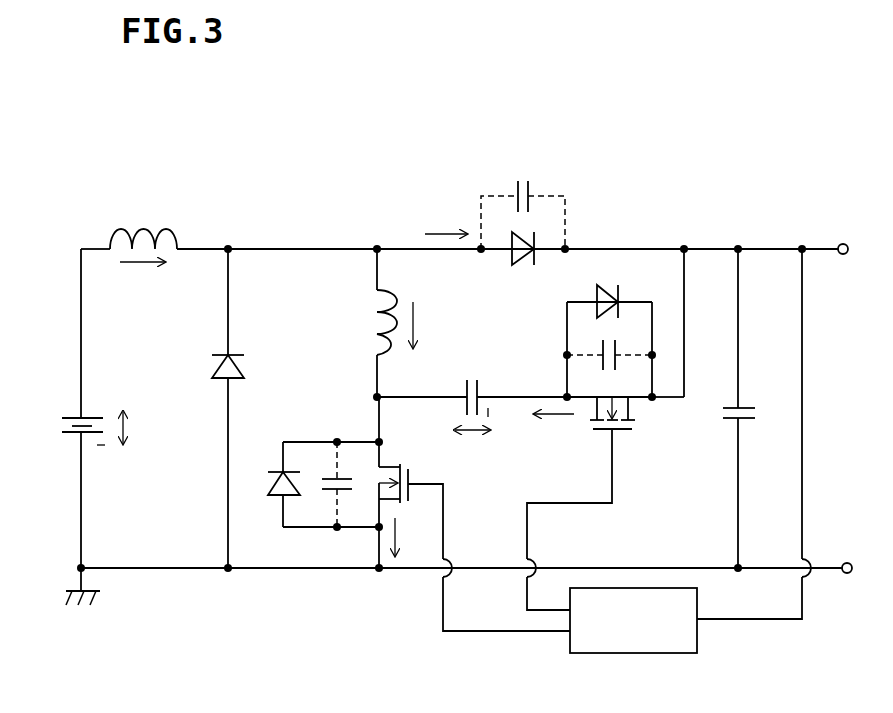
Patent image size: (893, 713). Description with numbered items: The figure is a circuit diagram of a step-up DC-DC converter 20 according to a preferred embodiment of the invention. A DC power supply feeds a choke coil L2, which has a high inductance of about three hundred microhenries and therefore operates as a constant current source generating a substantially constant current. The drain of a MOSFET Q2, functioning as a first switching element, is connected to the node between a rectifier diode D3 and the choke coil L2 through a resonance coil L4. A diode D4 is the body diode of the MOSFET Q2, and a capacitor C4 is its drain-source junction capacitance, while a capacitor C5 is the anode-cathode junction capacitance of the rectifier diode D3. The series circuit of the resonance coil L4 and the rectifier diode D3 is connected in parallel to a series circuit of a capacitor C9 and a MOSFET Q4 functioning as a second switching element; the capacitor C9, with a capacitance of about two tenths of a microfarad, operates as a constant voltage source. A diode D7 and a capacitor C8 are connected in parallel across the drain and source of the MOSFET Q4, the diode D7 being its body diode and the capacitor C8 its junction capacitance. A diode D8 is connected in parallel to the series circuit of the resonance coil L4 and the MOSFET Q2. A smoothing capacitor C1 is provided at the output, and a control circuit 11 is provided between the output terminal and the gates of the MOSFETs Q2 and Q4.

The DC-DC converter 20 is at (763, 174).
The control circuit 11 is at (697, 636).
The choke coil L2 is at (143, 226).
The diode D8 is at (207, 369).
The resonance coil L4 is at (364, 322).
The rectifier diode D3 is at (503, 259).
The capacitor C5 is at (518, 208).
The capacitor C9 is at (473, 387).
The diode D7 is at (585, 302).
The capacitor C8 is at (585, 355).
The MOSFET Q4 is at (621, 431).
The diode D4 is at (278, 469).
The capacitor C4 is at (334, 469).
The MOSFET Q2 is at (403, 471).
The smoothing capacitor C1 is at (749, 400).